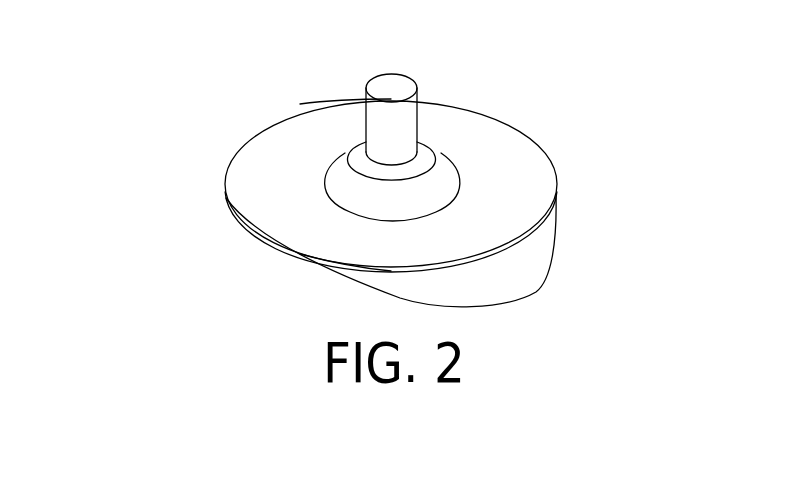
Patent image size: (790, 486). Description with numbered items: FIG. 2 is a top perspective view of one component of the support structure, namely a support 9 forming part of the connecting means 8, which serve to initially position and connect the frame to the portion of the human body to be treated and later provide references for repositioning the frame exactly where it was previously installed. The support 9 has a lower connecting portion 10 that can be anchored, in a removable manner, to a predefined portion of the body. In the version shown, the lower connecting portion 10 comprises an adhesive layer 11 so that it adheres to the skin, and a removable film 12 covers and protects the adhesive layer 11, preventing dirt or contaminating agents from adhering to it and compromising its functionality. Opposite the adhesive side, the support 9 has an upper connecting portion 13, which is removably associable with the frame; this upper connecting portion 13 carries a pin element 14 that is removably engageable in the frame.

The connecting means 8 is at (140, 178).
The support 9 is at (548, 92).
The lower connecting portion 10 is at (527, 182).
The adhesive layer 11 is at (452, 268).
The removable film 12 is at (372, 277).
The upper connecting portion 13 is at (278, 90).
The pin element 14 is at (393, 78).